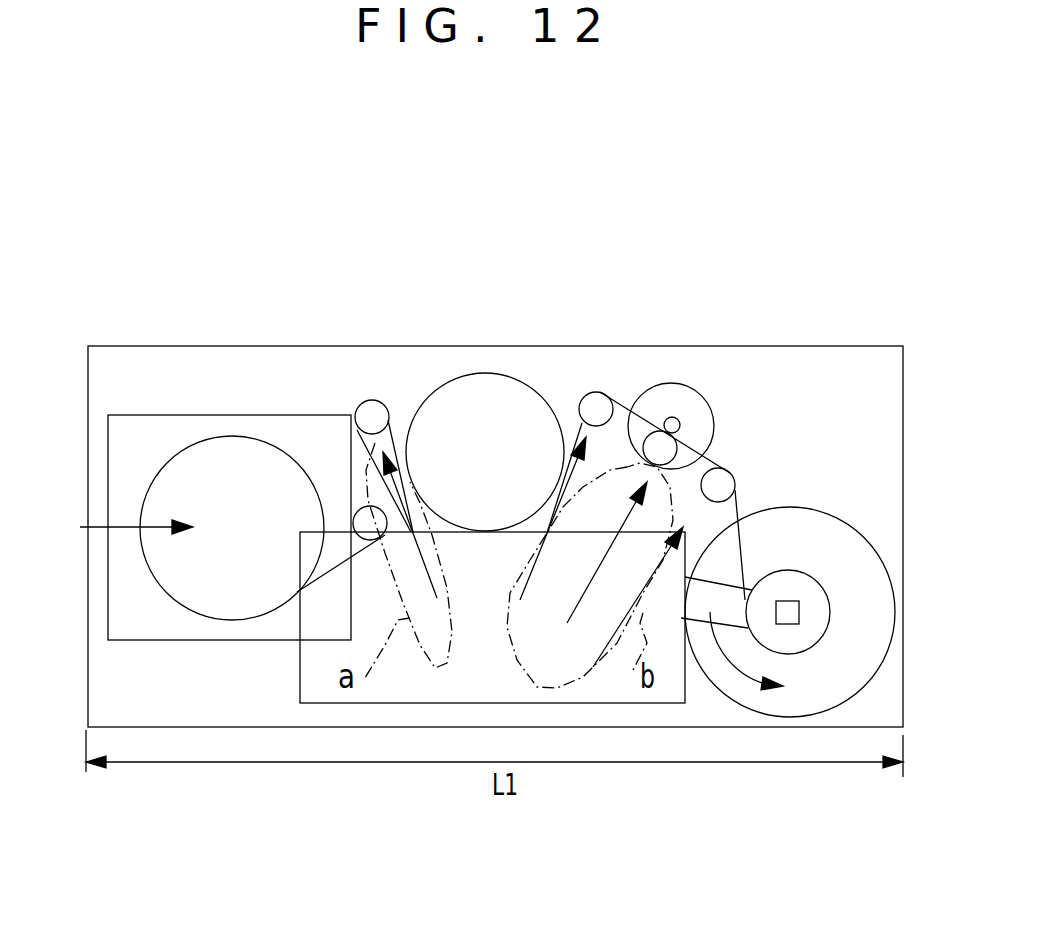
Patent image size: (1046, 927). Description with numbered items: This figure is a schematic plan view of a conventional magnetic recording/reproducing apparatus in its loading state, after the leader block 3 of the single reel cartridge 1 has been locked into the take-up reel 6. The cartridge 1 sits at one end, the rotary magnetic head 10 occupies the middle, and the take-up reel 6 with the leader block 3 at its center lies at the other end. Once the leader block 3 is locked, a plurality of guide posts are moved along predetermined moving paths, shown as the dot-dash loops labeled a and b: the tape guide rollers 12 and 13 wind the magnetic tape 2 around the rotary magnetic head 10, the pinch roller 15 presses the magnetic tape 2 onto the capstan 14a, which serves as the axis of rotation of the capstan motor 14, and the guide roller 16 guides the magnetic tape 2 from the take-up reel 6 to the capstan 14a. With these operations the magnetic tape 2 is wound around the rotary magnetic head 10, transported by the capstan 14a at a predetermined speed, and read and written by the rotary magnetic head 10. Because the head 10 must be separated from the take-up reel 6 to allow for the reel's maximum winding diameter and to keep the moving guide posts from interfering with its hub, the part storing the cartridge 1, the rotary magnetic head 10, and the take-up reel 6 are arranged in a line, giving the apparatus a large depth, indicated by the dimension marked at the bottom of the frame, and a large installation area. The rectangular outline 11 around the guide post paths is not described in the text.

The cartridge 1 is at (193, 413).
The magnetic tape 2 is at (742, 548).
The leader block 3 is at (799, 612).
The take-up reel 6 is at (867, 537).
The rotary magnetic head 10 is at (483, 373).
The sheet path housing 11 is at (300, 678).
The tape guide roller 12 is at (370, 400).
The tape guide roller 13 is at (584, 393).
The capstan motor 14 is at (714, 420).
The capstan 14a is at (673, 417).
The pinch roller 15 is at (621, 574).
The guide roller 16 is at (718, 485).